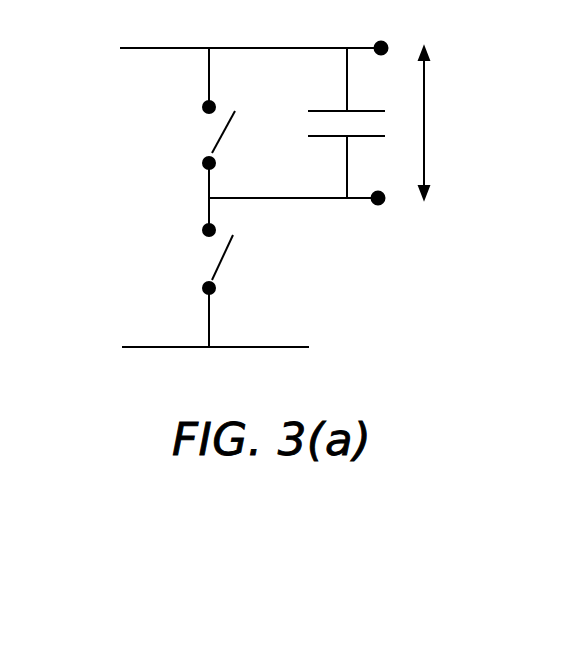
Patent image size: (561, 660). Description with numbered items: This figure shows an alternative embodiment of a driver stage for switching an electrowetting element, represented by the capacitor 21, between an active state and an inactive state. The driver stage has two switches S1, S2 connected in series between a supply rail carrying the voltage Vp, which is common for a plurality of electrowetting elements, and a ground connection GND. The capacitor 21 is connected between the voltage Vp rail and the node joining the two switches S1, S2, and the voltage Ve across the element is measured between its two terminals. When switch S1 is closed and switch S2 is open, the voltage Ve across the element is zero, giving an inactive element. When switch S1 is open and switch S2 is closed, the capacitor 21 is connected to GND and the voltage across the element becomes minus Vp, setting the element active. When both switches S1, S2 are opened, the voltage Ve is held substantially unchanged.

The capacitor 21 is at (324, 111).
The switch S1 is at (196, 135).
The switch S2 is at (195, 259).
The voltage Vp is at (101, 52).
The voltage across the element Ve is at (428, 123).
The ground GND is at (185, 349).